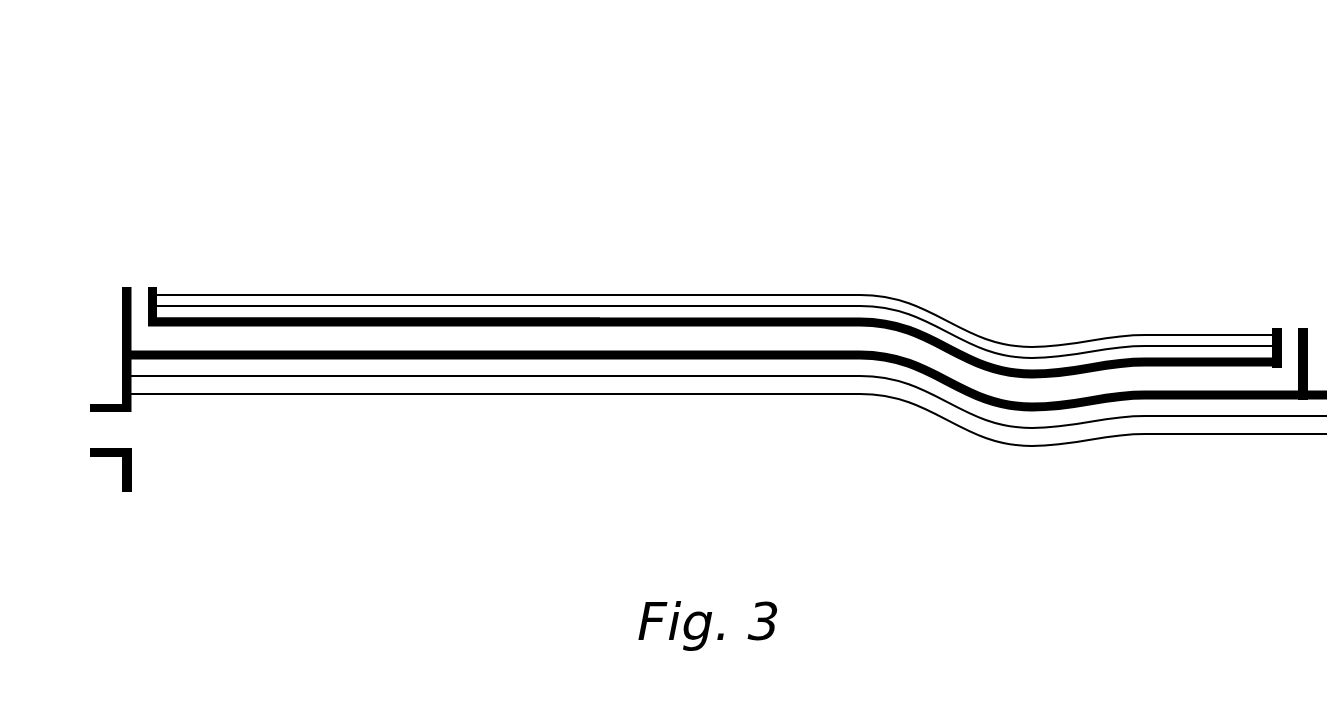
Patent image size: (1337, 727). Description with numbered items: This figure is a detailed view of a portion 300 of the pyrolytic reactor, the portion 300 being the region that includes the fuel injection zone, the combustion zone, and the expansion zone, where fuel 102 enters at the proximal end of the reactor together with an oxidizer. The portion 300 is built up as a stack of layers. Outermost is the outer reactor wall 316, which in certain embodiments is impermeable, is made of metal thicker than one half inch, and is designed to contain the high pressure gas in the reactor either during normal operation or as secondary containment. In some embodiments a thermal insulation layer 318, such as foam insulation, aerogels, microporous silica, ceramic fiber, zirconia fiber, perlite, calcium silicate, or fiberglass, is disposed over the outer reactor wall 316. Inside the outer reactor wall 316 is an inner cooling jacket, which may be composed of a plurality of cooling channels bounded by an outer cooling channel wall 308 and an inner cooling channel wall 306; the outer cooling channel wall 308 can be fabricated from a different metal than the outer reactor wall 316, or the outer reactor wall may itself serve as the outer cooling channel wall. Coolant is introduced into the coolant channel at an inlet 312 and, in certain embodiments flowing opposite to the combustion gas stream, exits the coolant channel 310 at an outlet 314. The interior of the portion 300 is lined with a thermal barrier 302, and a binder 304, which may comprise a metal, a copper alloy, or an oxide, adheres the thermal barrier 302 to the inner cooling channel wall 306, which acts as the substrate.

The portion 300 is at (1146, 70).
The fuel 102 is at (83, 442).
The thermal barrier 302 is at (362, 383).
The binder 304 is at (498, 367).
The inner cooling channel wall 306 is at (627, 360).
The outer cooling channel wall 308 is at (555, 318).
The coolant channel 310 is at (697, 318).
The inlet 312 is at (1290, 325).
The outlet 314 is at (142, 282).
The outer reactor wall 316 is at (432, 315).
The thermal insulation layer 318 is at (813, 300).